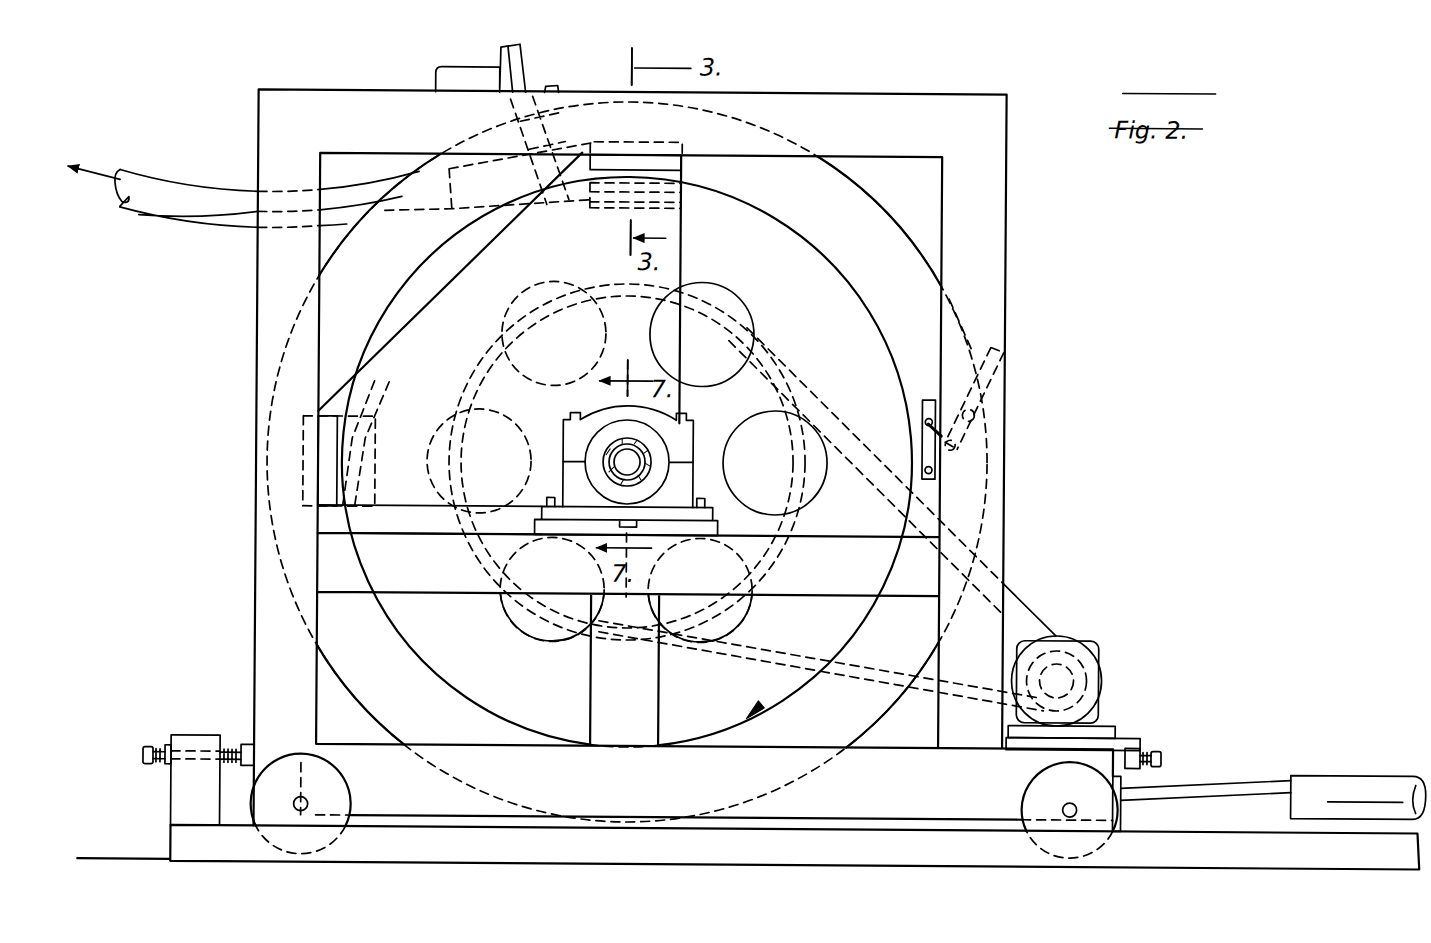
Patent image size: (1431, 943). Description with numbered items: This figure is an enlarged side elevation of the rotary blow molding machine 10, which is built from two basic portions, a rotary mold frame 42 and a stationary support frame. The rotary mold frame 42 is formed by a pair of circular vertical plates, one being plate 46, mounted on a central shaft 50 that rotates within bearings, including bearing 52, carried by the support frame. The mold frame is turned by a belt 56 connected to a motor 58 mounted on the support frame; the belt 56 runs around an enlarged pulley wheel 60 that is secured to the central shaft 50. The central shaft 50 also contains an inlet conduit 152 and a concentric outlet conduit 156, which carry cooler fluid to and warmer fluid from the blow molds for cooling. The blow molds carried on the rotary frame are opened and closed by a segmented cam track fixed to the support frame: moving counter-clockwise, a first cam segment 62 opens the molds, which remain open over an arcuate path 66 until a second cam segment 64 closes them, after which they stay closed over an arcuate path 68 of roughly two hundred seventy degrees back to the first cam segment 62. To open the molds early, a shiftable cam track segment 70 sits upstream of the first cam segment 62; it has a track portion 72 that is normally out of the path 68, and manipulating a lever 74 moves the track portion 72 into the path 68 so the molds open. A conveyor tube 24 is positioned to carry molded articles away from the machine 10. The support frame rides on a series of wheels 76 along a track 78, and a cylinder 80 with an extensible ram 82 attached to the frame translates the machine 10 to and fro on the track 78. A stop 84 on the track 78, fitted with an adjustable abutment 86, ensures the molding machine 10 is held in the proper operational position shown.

The rotary blow molding machine 10 is at (913, 78).
The conveyor tube 24 is at (183, 210).
The rotary mold frame 42 is at (898, 222).
The circular vertical plate 46 is at (810, 310).
The central shaft 50 is at (606, 466).
The bearing 52 is at (682, 482).
The belt 56 is at (1035, 610).
The motor 58 is at (1093, 671).
The enlarged pulley wheel 60 is at (779, 565).
The first cam segment 62 is at (637, 181).
The second cam segment 64 is at (318, 445).
The arcuate path 66 is at (411, 314).
The arcuate path 68 is at (733, 727).
The shiftable cam track segment 70 is at (956, 380).
The track portion 72 is at (922, 424).
The lever 74 is at (992, 368).
The wheels 76 is at (343, 791).
The track 78 is at (1197, 847).
The cylinder 80 is at (1363, 787).
The extensible ram 82 is at (1228, 792).
The stop 84 is at (180, 793).
The adjustable abutment 86 is at (233, 752).
The inlet conduit 152 is at (655, 457).
The outlet conduit 156 is at (617, 450).